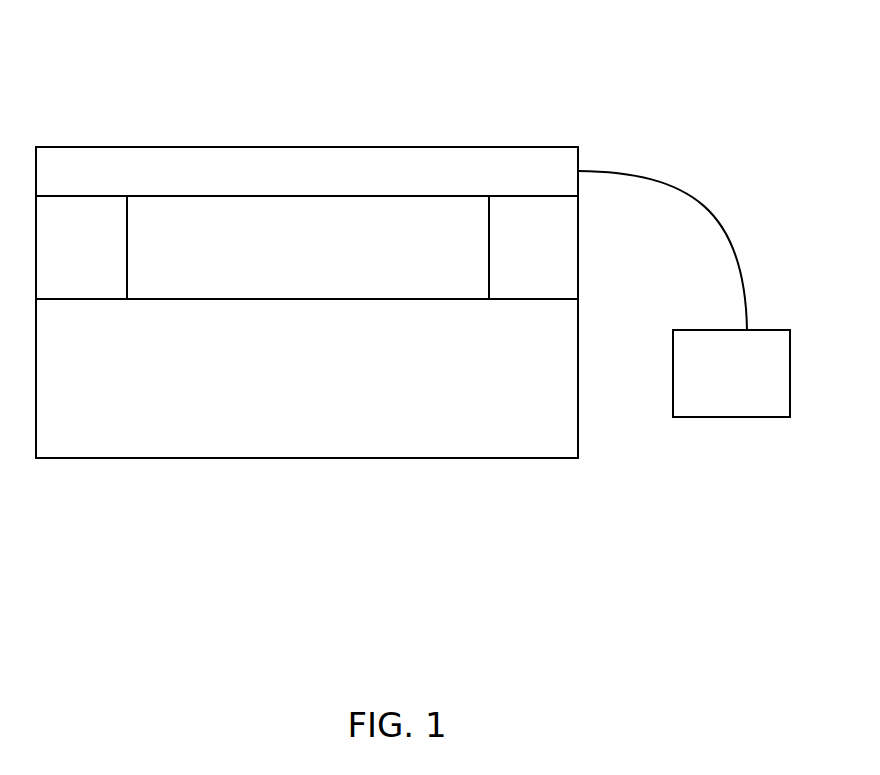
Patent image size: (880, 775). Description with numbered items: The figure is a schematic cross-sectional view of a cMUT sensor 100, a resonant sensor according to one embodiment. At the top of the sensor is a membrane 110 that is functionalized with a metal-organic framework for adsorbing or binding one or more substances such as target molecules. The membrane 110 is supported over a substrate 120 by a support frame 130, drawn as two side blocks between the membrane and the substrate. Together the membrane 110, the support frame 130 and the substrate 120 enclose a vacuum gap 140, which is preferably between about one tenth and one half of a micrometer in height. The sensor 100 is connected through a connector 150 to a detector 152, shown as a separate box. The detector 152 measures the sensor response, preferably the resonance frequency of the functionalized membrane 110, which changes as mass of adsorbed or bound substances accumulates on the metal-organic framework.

The cMUT sensor 100 is at (78, 80).
The membrane 110 is at (322, 181).
The substrate 120 is at (322, 411).
The support frame 130 is at (102, 251).
The vacuum gap 140 is at (325, 252).
The connector 150 is at (689, 194).
The detector 152 is at (752, 384).